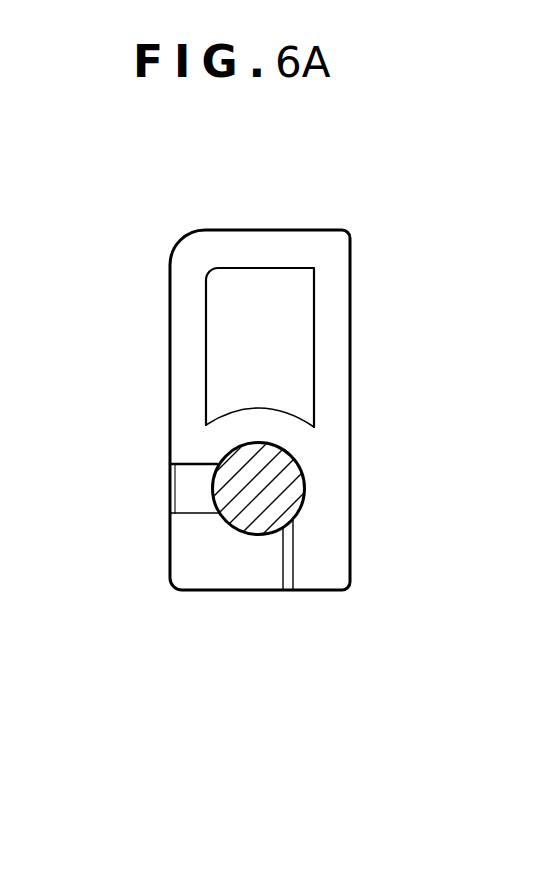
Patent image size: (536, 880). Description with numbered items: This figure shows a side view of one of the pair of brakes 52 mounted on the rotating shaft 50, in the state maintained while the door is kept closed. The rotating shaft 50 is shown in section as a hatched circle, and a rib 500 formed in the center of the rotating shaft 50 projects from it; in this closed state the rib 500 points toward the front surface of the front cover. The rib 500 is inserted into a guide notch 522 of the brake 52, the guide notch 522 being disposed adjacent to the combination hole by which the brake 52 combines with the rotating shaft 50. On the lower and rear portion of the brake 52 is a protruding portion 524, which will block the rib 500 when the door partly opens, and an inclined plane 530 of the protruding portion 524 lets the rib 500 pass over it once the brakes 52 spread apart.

The brake 52 is at (328, 365).
The rotating shaft 50 is at (297, 490).
The rib 500 is at (190, 497).
The guide notch 522 is at (232, 568).
The protruding portion 524 is at (330, 553).
The inclined plane 530 is at (288, 582).